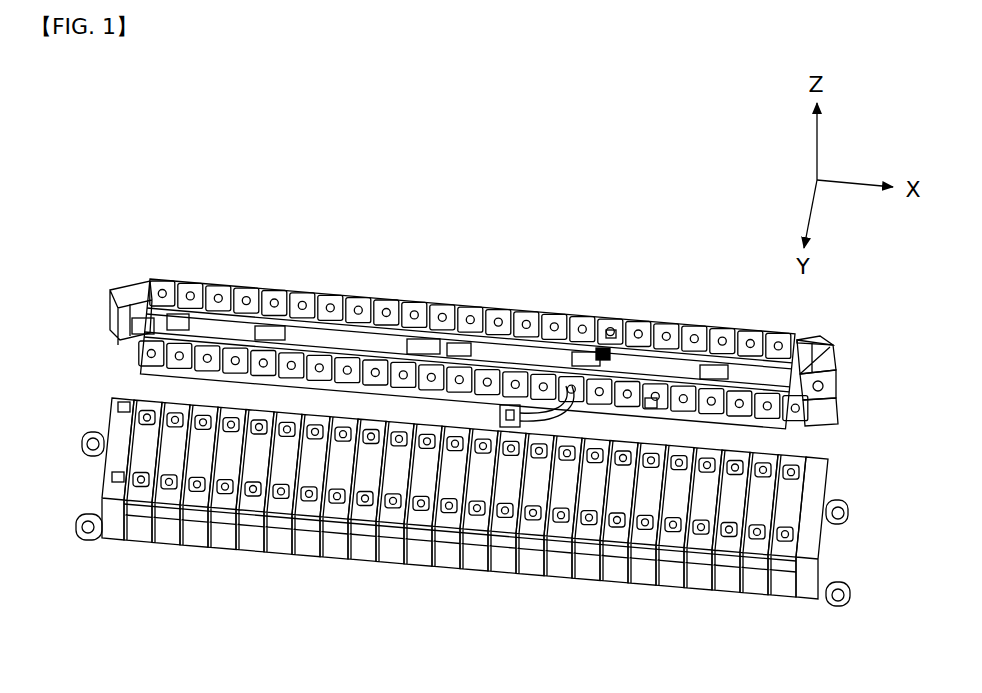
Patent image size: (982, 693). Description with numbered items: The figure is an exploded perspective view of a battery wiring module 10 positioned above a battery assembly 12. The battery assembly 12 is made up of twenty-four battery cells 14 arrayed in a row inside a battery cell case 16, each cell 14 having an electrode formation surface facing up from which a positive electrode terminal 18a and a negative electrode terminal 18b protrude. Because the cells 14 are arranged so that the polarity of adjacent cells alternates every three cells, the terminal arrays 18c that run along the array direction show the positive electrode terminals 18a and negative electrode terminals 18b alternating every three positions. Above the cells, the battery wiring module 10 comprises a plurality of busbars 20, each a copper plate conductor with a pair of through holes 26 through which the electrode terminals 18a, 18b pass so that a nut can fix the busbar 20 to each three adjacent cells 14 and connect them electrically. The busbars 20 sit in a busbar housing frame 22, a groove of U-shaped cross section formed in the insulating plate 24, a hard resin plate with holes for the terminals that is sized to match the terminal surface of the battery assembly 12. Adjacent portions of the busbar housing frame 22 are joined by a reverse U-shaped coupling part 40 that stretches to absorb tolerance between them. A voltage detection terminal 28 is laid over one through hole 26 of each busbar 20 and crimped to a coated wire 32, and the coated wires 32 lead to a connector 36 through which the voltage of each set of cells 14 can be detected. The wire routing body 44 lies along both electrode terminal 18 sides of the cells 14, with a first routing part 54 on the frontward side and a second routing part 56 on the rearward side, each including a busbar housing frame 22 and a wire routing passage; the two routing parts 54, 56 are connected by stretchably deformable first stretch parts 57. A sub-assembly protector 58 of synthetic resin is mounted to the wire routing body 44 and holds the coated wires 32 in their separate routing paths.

The battery wiring module 10 is at (414, 246).
The battery assembly 12 is at (839, 453).
The battery cell 14 is at (245, 545).
The battery cell case 16 is at (812, 577).
The electrode terminal 18 is at (895, 465).
The positive electrode terminal 18a is at (193, 482).
The negative electrode terminal 18b is at (147, 413).
The terminal array 18c is at (128, 408).
The busbar 20 is at (210, 297).
The busbar housing frame 22 is at (166, 292).
The insulating plate 24 is at (520, 280).
The through hole 26 is at (133, 302).
The voltage detection terminal 28 is at (185, 290).
The coated wire 32 is at (553, 408).
The connector 36 is at (490, 412).
The coupling part 40 is at (232, 316).
The wire routing body 44 is at (905, 352).
The first routing part 54 is at (838, 405).
The second routing part 56 is at (838, 357).
The first stretch part 57 is at (155, 321).
The sub-assembly protector 58 is at (609, 332).